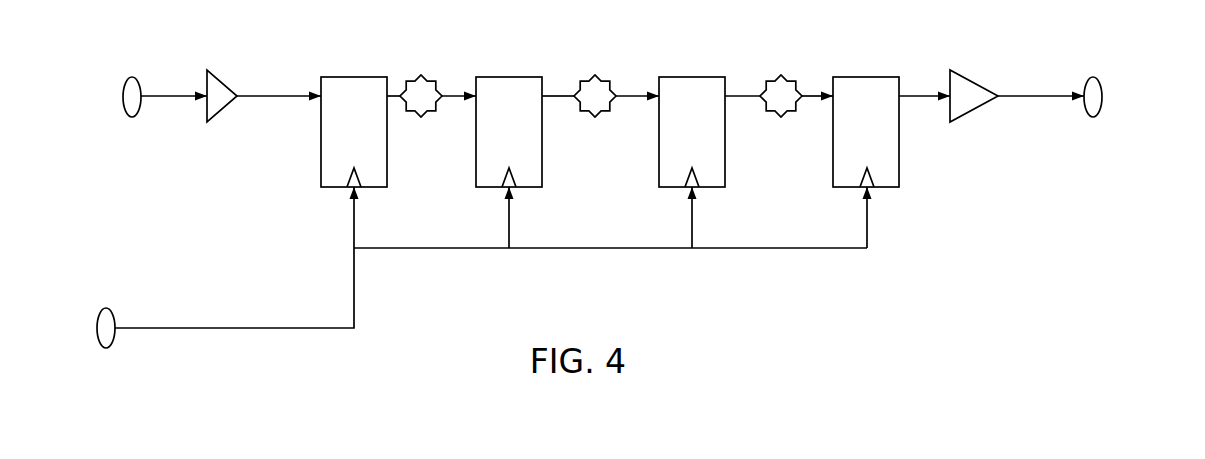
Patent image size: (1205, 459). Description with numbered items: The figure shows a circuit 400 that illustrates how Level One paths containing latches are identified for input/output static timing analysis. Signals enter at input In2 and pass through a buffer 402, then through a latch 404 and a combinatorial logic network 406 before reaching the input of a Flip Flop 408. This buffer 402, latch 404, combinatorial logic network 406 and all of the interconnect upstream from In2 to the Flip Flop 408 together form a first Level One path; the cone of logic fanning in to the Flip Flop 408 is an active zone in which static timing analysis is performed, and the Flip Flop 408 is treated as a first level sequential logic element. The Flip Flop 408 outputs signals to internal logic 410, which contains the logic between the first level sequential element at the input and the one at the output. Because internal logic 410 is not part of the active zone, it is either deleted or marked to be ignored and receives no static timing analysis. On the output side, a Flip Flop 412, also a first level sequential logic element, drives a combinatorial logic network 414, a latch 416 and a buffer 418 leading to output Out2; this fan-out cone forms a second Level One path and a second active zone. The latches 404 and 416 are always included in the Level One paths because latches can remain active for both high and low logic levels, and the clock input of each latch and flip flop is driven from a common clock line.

The circuit 400 is at (119, 26).
The buffer 402 is at (220, 78).
The latch 404 is at (355, 77).
The combinatorial logic network 406 is at (423, 76).
The Flip Flop 408 is at (508, 77).
The internal logic 410 is at (597, 76).
The Flip Flop 412 is at (692, 77).
The combinatorial logic network 414 is at (781, 76).
The latch 416 is at (867, 77).
The buffer 418 is at (972, 75).